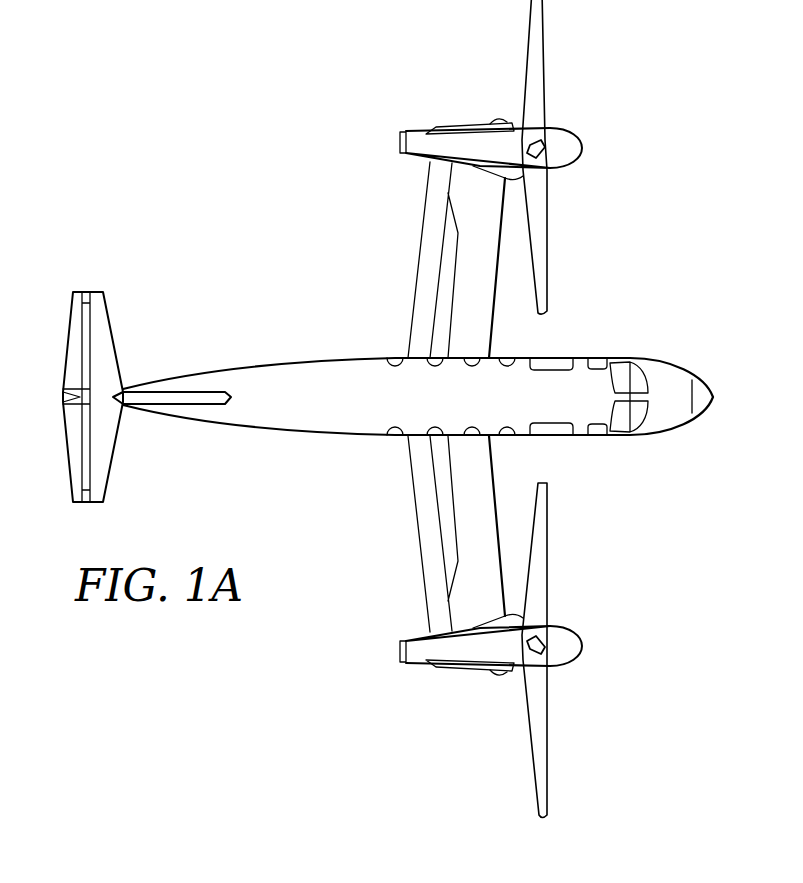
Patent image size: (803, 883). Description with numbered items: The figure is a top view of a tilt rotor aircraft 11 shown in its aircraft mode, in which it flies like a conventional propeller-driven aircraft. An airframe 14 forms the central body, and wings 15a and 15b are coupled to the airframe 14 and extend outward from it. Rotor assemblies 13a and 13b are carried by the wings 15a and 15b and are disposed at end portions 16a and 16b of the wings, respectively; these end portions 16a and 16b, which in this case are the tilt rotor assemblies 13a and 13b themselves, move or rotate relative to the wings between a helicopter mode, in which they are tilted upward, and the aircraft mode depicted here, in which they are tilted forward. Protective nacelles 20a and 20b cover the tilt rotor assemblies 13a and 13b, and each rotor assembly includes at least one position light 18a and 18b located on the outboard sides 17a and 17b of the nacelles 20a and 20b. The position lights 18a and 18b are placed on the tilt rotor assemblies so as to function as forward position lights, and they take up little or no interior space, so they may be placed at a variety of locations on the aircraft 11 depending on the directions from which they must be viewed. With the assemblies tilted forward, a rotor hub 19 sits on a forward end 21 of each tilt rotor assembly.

The aircraft 11 is at (236, 303).
The rotor assembly 13a is at (410, 97).
The rotor assembly 13b is at (410, 697).
The airframe 14 is at (298, 432).
The wing 15a is at (417, 252).
The wing 15b is at (417, 542).
The end portion 16a is at (414, 174).
The end portion 16b is at (414, 620).
The outboard side 17a is at (468, 123).
The outboard side 17b is at (468, 671).
The position light 18a is at (495, 120).
The position light 18b is at (495, 674).
The rotor hub 19 is at (567, 130).
The protective nacelle 20a is at (400, 133).
The protective nacelle 20b is at (400, 661).
The forward end 21 is at (522, 172).